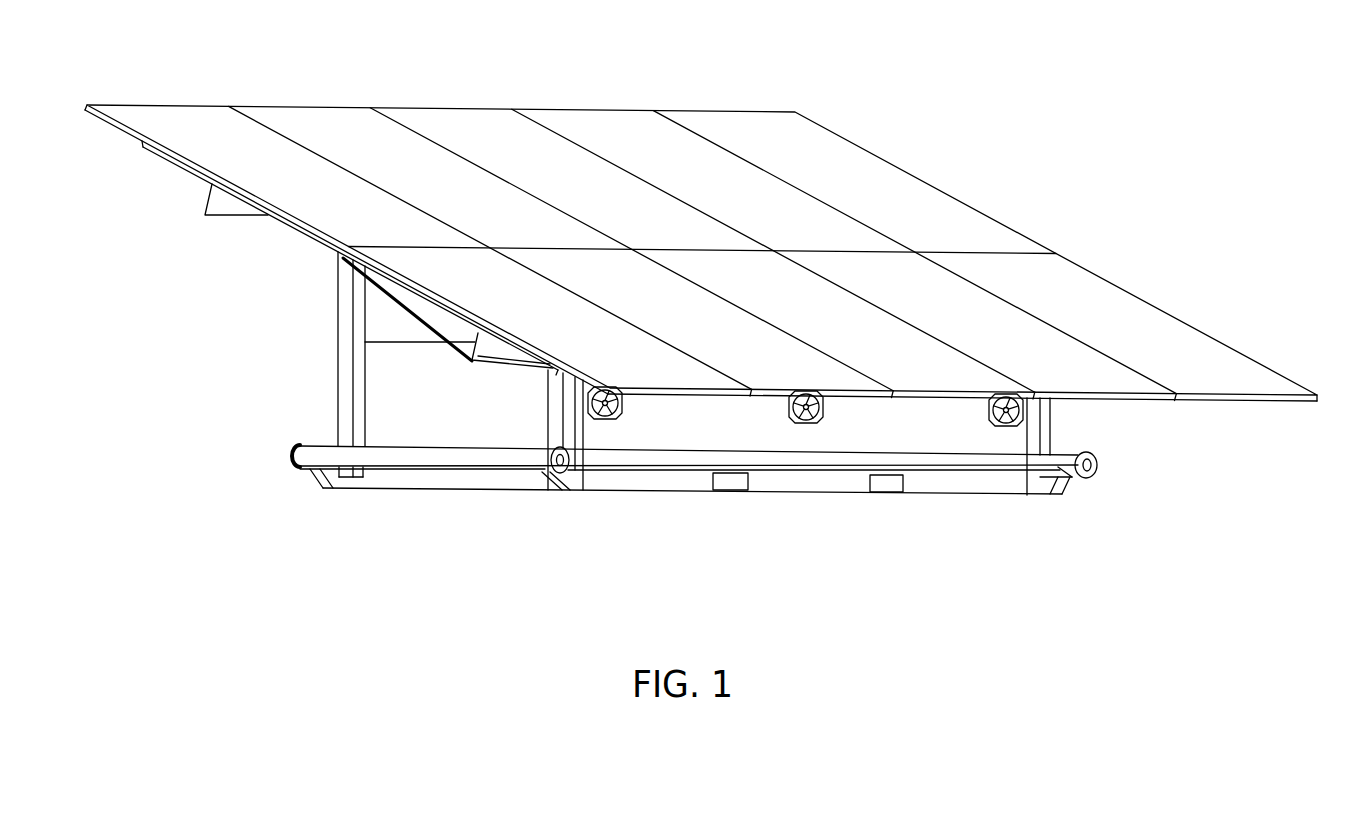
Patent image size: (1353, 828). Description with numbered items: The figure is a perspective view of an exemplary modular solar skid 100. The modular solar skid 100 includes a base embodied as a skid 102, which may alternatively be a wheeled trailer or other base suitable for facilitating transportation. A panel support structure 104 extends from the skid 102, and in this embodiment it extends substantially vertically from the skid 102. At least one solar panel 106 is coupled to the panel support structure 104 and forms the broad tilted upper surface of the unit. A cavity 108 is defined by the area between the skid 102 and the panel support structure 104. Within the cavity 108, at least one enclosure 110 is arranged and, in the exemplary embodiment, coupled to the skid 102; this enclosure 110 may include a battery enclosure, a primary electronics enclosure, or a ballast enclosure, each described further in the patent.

The modular solar skid 100 is at (1039, 82).
The skid 102 is at (424, 499).
The panel support structure 104 is at (197, 220).
The solar panel 106 is at (1119, 278).
The cavity 108 is at (314, 316).
The enclosure 110 is at (392, 383).